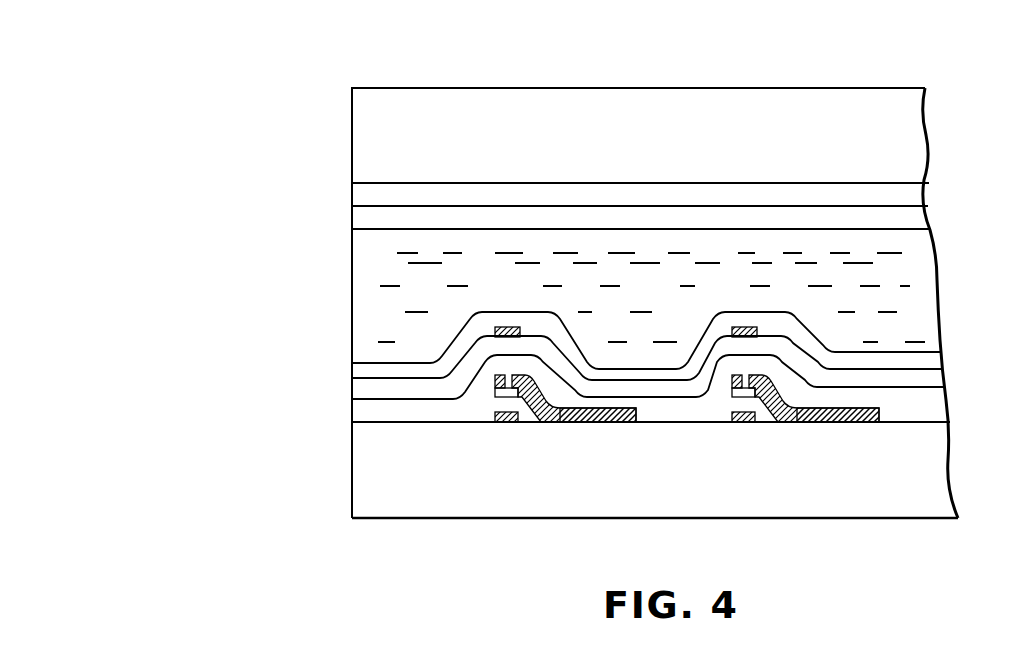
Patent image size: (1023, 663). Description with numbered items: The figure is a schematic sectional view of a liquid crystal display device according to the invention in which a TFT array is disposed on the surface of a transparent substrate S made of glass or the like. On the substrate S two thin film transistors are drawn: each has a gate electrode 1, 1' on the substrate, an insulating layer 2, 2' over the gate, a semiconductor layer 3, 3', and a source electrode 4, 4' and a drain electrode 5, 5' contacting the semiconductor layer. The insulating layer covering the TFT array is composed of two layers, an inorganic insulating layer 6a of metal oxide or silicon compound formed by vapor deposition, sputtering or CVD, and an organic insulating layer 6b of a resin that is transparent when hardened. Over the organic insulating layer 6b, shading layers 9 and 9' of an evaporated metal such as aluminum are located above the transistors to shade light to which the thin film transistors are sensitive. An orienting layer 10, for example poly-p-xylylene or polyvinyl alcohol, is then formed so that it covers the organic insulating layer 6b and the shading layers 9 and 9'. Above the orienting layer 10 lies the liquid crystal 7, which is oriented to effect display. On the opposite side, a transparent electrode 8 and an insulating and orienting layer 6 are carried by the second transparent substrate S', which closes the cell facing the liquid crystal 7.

The gate electrode 1 is at (501, 437).
The gate electrode 1' is at (743, 437).
The insulating layer 2 is at (490, 440).
The insulating layer 2' is at (734, 440).
The semiconductor layer 3 is at (574, 434).
The semiconductor layer 3' is at (814, 434).
The source electrode 4 is at (472, 419).
The source electrode 4' is at (716, 419).
The drain electrode 5 is at (598, 435).
The drain electrode 5' is at (838, 435).
The insulating and orienting layer 6 is at (358, 219).
The inorganic insulating layer 6a is at (358, 410).
The organic insulating layer 6b is at (358, 388).
The liquid crystal 7 is at (917, 293).
The transparent electrode 8 is at (917, 193).
The shading layer 9 is at (504, 302).
The shading layer 9' is at (732, 302).
The orienting layer 10 is at (358, 370).
The transparent substrate S is at (655, 496).
The transparent substrate S' is at (638, 275).